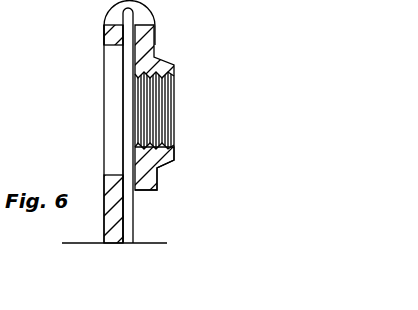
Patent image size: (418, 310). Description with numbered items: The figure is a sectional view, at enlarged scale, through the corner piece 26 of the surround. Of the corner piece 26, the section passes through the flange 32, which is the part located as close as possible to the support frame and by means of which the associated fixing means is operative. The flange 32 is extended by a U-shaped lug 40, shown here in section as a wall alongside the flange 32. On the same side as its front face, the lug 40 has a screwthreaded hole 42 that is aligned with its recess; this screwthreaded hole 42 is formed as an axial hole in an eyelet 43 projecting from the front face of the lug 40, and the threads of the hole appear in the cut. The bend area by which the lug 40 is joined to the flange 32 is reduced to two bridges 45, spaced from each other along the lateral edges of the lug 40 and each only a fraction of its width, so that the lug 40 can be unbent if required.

The bridge 45 is at (103, 7).
The flange 32 is at (104, 231).
The corner piece 26 is at (135, 233).
The U-shaped lug 40 is at (239, 134).
The screwthreaded hole 42 is at (165, 79).
The eyelet 43 is at (177, 160).